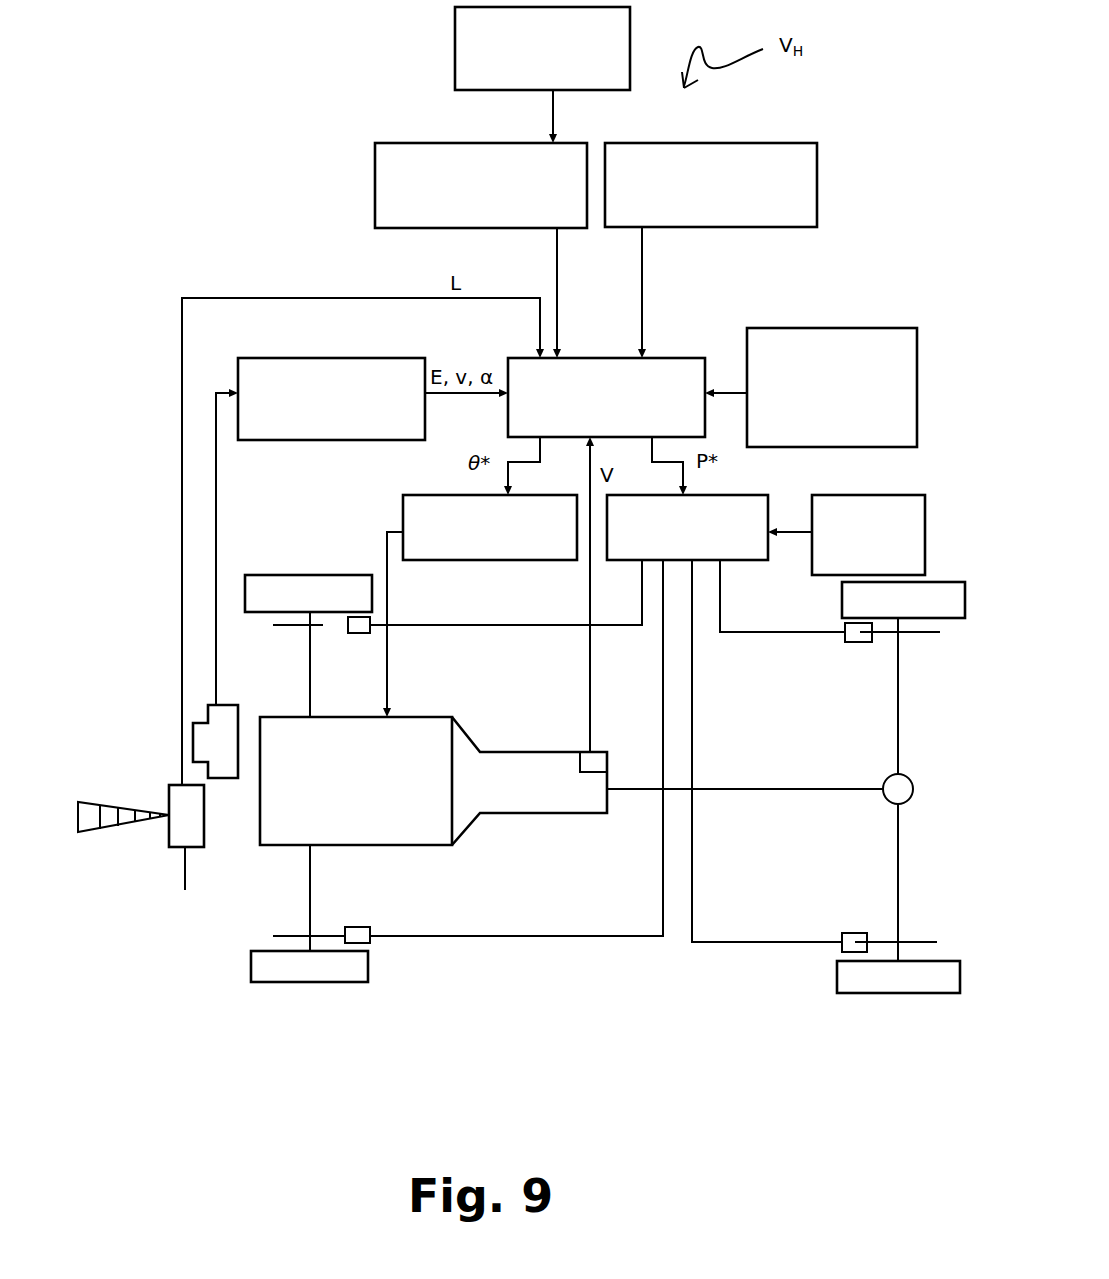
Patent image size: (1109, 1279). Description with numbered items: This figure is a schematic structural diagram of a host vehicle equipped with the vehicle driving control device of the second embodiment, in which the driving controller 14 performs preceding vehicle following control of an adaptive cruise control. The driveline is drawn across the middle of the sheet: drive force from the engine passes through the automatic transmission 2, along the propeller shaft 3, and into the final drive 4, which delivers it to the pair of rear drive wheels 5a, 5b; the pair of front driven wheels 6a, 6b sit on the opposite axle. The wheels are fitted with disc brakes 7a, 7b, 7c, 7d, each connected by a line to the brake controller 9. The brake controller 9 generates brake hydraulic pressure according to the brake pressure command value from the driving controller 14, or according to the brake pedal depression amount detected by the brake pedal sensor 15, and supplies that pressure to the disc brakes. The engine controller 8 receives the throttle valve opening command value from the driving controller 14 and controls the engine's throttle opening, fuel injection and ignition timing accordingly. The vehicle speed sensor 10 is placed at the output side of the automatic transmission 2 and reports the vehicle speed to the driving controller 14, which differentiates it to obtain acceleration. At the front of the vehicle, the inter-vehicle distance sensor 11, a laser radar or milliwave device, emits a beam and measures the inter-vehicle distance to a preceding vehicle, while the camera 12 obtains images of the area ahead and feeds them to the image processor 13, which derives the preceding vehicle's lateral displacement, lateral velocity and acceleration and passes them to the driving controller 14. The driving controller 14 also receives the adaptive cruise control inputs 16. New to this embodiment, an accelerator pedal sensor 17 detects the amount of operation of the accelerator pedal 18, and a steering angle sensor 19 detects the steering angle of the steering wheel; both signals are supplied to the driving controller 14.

The accelerator pedal 18 is at (455, 75).
The accelerator pedal sensor 17 is at (375, 183).
The steering angle sensor 19 is at (817, 183).
The image processor 13 is at (308, 440).
The driving controller 14 is at (685, 357).
The adaptive cruise control inputs 16 is at (893, 328).
The engine controller 8 is at (450, 560).
The brake controller 9 is at (768, 495).
The brake pedal sensor 15 is at (908, 495).
The front driven wheel 6a is at (353, 575).
The front driven wheel 6b is at (294, 982).
The rear drive wheel 5a is at (947, 582).
The rear drive wheel 5b is at (885, 993).
The disc brake 7a is at (358, 633).
The disc brake 7b is at (360, 927).
The disc brake 7c is at (858, 642).
The disc brake 7d is at (852, 933).
The camera 12 is at (230, 705).
The inter-vehicle distance sensor 11 is at (141, 859).
The automatic transmission 2 is at (518, 813).
The vehicle speed sensor 10 is at (601, 752).
The propeller shaft 3 is at (768, 789).
The final drive 4 is at (913, 789).